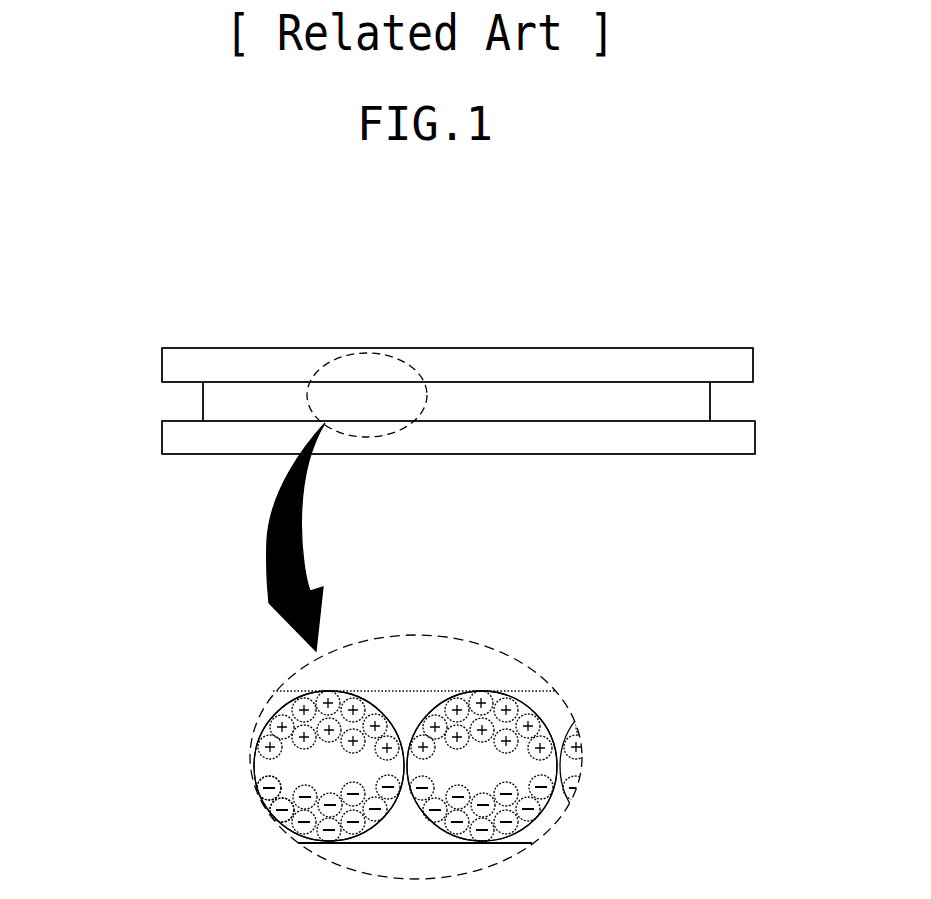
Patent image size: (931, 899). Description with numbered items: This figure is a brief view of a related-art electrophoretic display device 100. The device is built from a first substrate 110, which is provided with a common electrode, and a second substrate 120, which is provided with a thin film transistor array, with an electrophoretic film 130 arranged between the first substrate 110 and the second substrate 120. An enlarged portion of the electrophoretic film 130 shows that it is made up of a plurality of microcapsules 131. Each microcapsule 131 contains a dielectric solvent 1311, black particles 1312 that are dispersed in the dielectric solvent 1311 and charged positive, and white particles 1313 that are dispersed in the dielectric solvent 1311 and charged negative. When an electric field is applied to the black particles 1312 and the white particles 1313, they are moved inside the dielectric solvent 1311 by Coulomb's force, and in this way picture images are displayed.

The electrophoretic display device 100 is at (145, 270).
The first substrate 110 is at (172, 365).
The second substrate 120 is at (172, 438).
The electrophoretic film 130 is at (214, 399).
The microcapsule 131 is at (150, 721).
The dielectric solvent 1311 is at (256, 768).
The black particles 1312 is at (260, 716).
The white particles 1313 is at (272, 812).